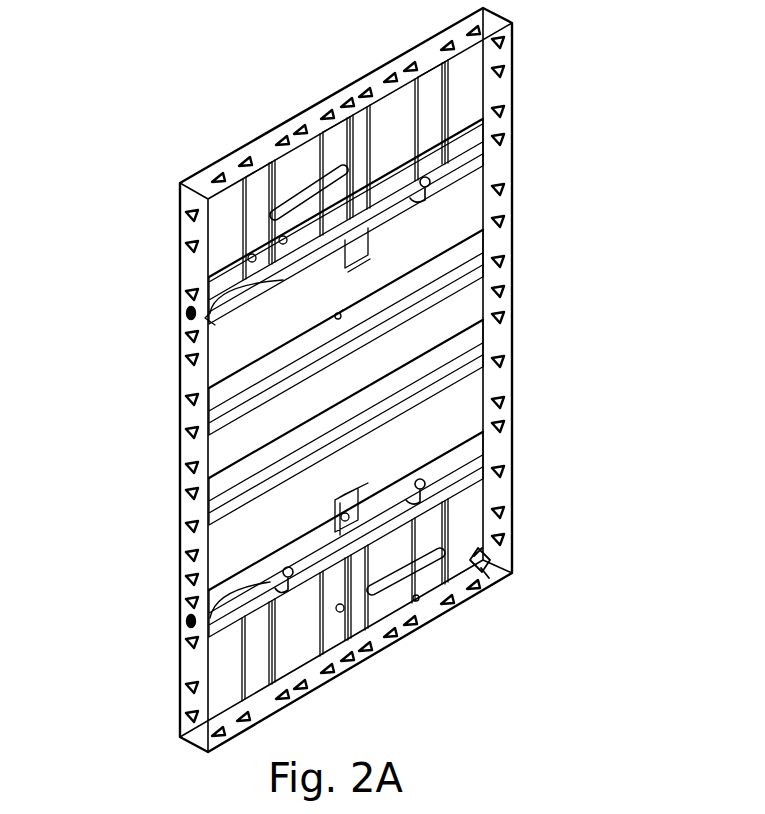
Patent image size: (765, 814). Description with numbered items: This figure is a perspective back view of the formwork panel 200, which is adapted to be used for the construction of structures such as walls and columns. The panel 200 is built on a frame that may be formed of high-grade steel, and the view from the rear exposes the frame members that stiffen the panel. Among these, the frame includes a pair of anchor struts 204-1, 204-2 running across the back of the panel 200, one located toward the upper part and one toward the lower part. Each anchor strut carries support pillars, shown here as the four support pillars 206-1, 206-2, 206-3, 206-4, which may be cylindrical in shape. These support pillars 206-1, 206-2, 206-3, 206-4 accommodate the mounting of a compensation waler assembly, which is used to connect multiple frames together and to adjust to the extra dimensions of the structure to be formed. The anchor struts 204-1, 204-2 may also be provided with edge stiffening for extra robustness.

The panel 200 is at (190, 112).
The anchor strut 204-1 is at (215, 292).
The anchor strut 204-2 is at (235, 577).
The support pillar 206-1 is at (223, 303).
The support pillar 206-2 is at (432, 186).
The support pillar 206-3 is at (209, 638).
The support pillar 206-4 is at (428, 489).